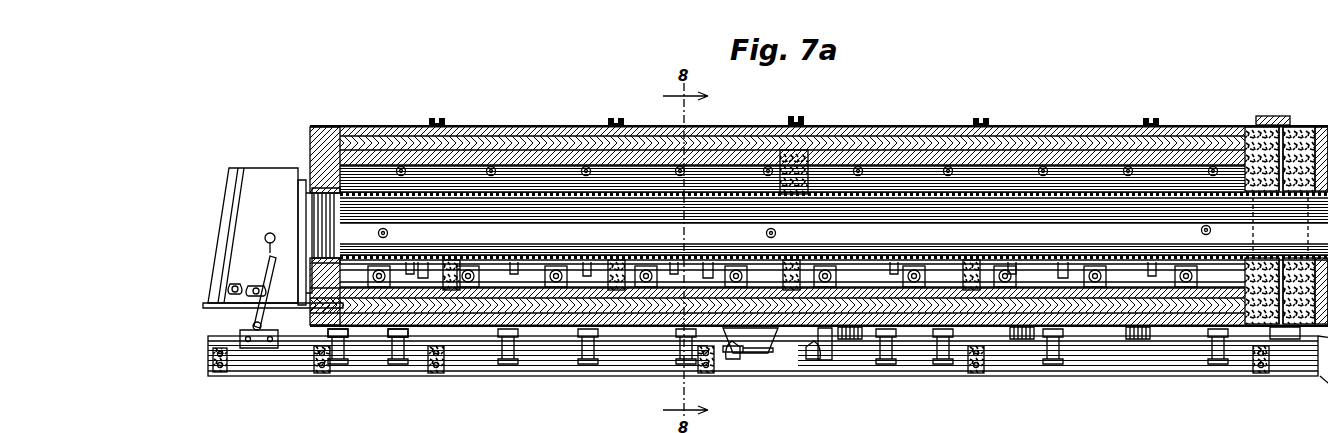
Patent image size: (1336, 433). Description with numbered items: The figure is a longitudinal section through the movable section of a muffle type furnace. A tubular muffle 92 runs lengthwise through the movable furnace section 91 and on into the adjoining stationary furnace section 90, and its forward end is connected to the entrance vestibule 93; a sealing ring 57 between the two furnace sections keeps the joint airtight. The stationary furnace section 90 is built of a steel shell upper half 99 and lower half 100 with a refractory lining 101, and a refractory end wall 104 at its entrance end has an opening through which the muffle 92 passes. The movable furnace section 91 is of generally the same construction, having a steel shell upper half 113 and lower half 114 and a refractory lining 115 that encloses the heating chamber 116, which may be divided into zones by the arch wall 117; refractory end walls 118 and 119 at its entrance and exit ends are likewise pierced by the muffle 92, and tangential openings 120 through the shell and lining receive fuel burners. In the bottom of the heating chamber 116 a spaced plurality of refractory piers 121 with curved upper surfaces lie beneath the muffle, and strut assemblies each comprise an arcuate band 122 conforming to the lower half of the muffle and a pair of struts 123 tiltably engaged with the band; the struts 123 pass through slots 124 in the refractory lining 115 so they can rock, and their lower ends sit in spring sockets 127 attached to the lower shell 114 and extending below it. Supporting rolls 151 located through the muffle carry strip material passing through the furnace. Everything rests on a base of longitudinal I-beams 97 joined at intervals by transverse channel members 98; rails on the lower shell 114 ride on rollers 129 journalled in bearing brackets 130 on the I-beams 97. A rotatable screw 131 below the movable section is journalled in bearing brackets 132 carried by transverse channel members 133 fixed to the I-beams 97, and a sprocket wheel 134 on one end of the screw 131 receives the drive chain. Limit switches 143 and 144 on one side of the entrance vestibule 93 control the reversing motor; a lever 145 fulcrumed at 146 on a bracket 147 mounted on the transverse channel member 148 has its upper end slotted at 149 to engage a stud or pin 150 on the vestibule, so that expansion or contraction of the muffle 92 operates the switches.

The sealing ring 57 is at (1265, 107).
The stationary furnace section 90 is at (1290, 117).
The movable furnace section 91 is at (1085, 128).
The tubular muffle 92 is at (940, 246).
The entrance vestibule 93 is at (255, 165).
The longitudinal I-beams 97 is at (1090, 366).
The transversely disposed channel members 98 is at (440, 355).
The steel shell upper half 99 is at (1313, 117).
The steel shell lower half 100 is at (1318, 360).
The refractory lining 101 is at (1300, 252).
The refractory end wall 104 is at (1280, 228).
The steel shell upper half 113 is at (897, 120).
The steel shell lower half 114 is at (565, 318).
The refractory lining 115 is at (577, 140).
The heating chamber 116 is at (503, 165).
The arch wall 117 is at (795, 145).
The refractory end wall 118 is at (325, 172).
The refractory end wall 119 is at (1240, 128).
The tangential openings 120 is at (549, 257).
The refractory piers 121 is at (470, 254).
The arcuate band 122 is at (412, 254).
The struts 123 is at (520, 254).
The slots 124 is at (580, 254).
The spring sockets 127 is at (388, 352).
The rollers 129 is at (500, 362).
The bearing brackets 130 is at (845, 332).
The rotatable screw 131 is at (758, 346).
The bearing brackets 132 is at (745, 360).
The transversely disposed channel members 133 is at (728, 352).
The sprocket wheel 134 is at (820, 352).
The limit switch 143 is at (222, 280).
The limit switch 144 is at (245, 275).
The lever 145 is at (242, 310).
The fulcrum 146 is at (238, 322).
The bracket 147 is at (254, 318).
The transversely disposed channel member 148 is at (228, 362).
The slot 149 is at (257, 230).
The stud or pin 150 is at (268, 225).
The supporting rolls 151 is at (370, 225).